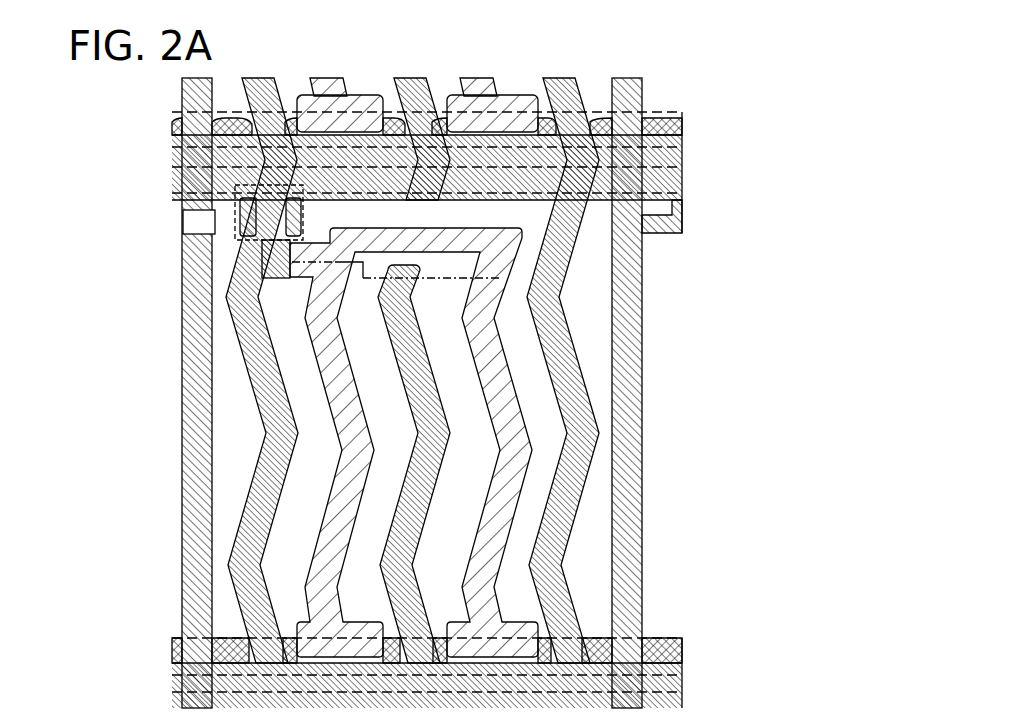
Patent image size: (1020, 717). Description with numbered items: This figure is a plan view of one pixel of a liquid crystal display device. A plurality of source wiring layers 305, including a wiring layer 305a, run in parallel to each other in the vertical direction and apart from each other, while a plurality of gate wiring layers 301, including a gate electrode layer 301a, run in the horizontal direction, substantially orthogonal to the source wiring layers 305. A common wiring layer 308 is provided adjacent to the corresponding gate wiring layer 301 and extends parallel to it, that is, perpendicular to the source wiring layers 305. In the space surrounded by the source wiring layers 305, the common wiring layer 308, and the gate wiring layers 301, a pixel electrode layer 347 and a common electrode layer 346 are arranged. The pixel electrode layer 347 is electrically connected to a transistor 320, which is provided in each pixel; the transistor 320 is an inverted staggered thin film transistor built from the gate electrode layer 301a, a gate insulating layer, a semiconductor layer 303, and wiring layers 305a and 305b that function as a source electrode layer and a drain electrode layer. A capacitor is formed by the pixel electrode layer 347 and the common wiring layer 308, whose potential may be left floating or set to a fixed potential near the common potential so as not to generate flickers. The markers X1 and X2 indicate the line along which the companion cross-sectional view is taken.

The gate wiring layer 301 is at (383, 410).
The gate electrode layer 301a is at (189, 212).
The semiconductor layer 303 is at (199, 311).
The source wiring layer 305 is at (414, 393).
The wiring layer 305a is at (172, 253).
The wiring layer 305b is at (191, 321).
The common wiring layer 308 is at (423, 377).
The transistor 320 is at (387, 137).
The common electrode layer 346 is at (473, 370).
The pixel electrode layer 347 is at (480, 300).
The section line end point X1 is at (240, 222).
The section line end point X2 is at (410, 277).